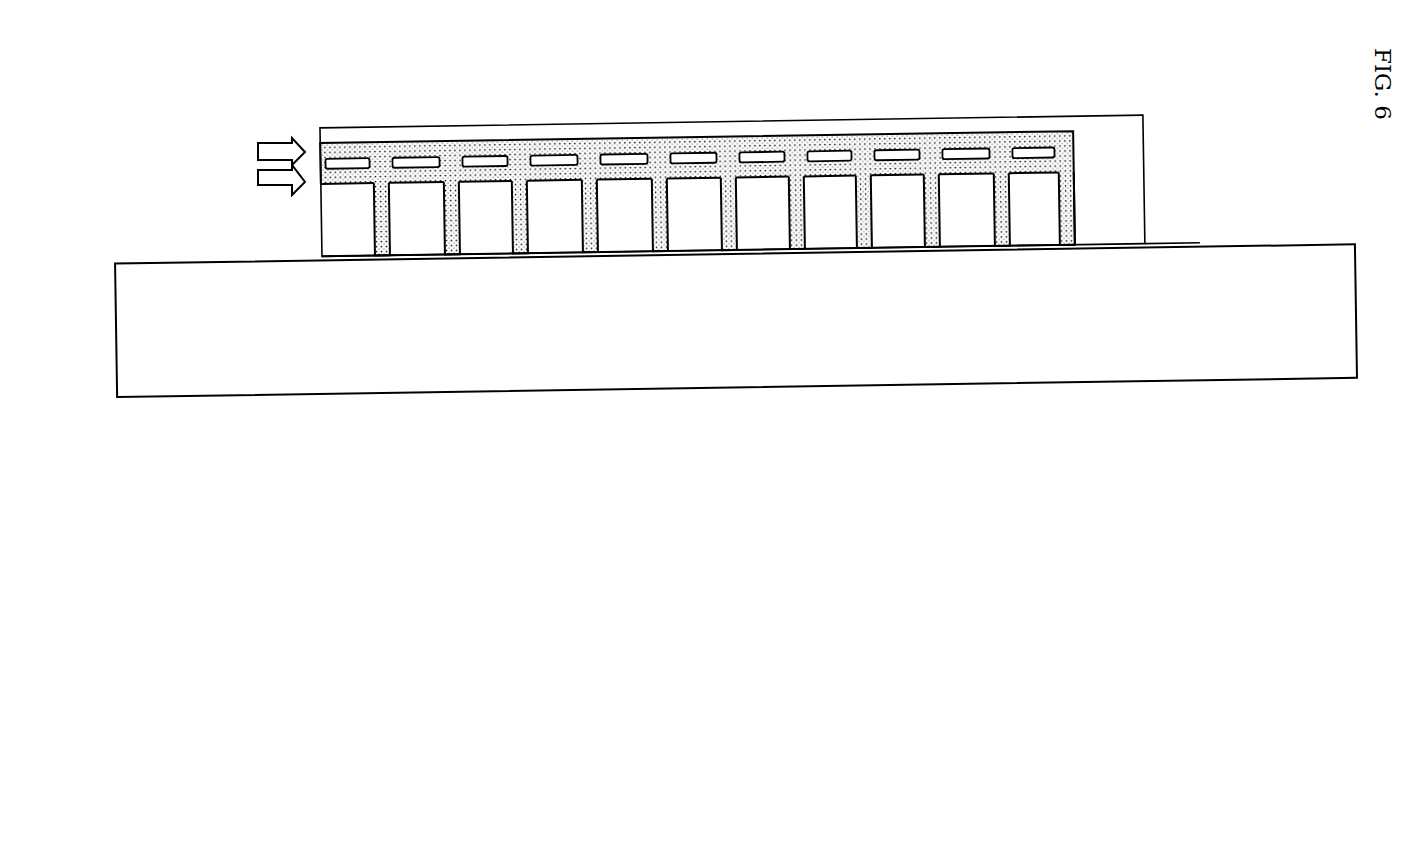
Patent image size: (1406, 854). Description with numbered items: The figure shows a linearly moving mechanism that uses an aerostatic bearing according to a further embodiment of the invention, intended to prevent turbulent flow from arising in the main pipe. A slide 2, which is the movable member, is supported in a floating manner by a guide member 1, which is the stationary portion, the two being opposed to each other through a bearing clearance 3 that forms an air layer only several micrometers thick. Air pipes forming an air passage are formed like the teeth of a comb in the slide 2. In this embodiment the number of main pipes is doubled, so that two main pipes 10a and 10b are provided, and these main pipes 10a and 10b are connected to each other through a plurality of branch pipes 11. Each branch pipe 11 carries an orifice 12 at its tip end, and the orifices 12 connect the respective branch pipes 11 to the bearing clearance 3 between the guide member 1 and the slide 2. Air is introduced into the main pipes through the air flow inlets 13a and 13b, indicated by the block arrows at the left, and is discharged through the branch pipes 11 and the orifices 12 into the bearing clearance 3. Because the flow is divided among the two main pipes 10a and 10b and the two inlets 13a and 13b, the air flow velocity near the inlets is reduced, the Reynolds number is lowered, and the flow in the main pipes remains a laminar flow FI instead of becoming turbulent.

The guide member 1 is at (1112, 373).
The slide 2 is at (948, 122).
The bearing clearance 3 is at (1153, 244).
The main pipe 10a is at (627, 170).
The main pipe 10b is at (798, 138).
The branch pipe 11 is at (422, 160).
The orifice 12 is at (665, 255).
The air flow inlet 13a is at (321, 183).
The air flow inlet 13b is at (321, 142).
The laminar flow FI is at (585, 150).